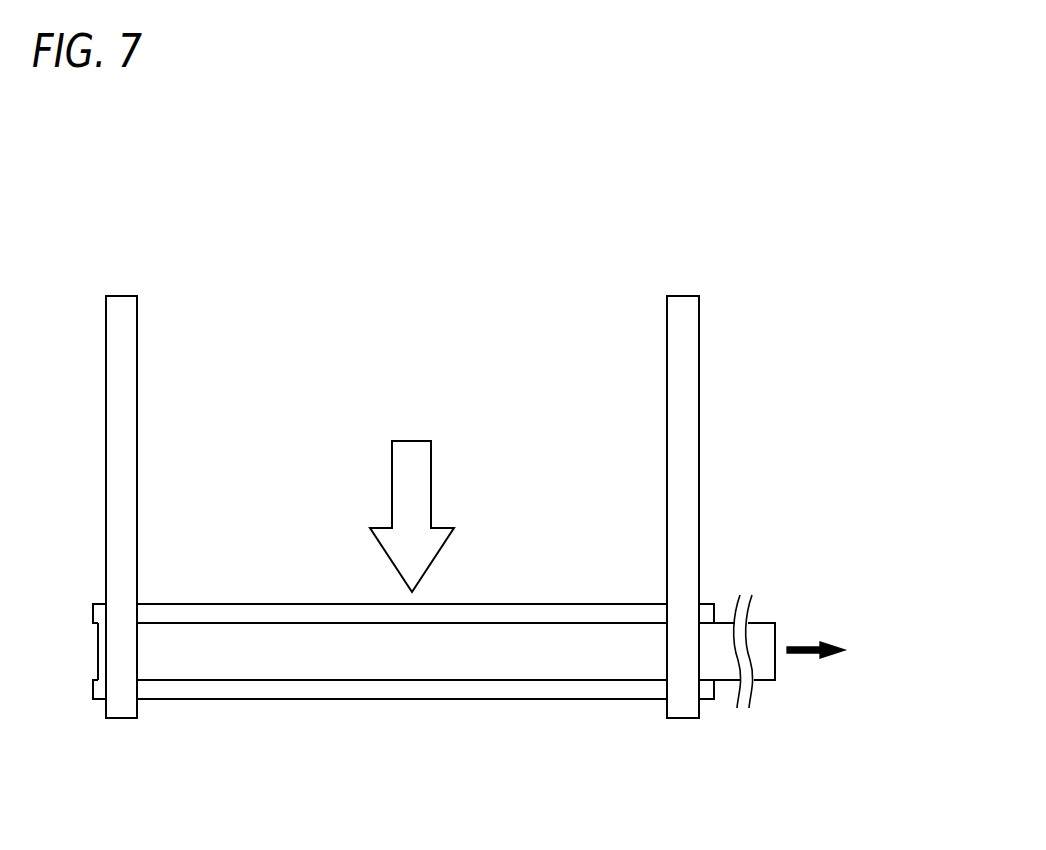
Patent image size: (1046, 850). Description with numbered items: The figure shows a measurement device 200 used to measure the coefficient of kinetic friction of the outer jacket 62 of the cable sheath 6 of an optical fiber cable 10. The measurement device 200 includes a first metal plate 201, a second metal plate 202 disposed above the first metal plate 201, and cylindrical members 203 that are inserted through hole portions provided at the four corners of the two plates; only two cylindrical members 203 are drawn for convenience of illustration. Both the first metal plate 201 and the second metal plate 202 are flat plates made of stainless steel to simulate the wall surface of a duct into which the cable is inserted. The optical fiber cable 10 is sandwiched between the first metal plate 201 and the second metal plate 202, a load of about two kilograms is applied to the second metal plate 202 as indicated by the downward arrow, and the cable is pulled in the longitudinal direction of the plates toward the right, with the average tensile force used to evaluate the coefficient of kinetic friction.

The measurement device 200 is at (559, 250).
The cylindrical member 203 is at (137, 360).
The second metal plate 202 is at (522, 604).
The first metal plate 201 is at (527, 699).
The optical fiber cable 10 is at (767, 609).
The cable sheath 6 is at (747, 561).
The outer jacket 62 is at (723, 618).